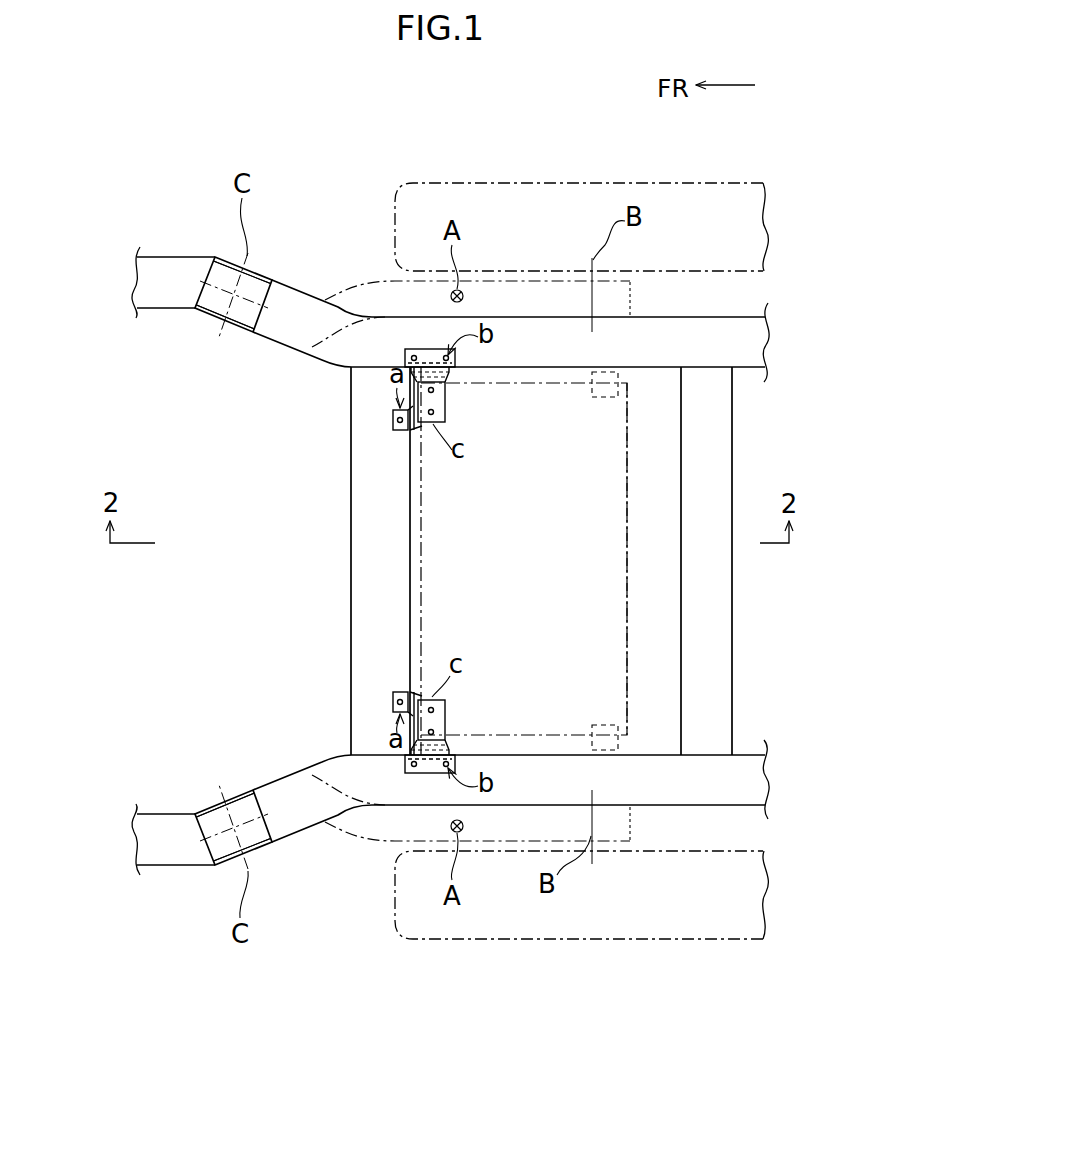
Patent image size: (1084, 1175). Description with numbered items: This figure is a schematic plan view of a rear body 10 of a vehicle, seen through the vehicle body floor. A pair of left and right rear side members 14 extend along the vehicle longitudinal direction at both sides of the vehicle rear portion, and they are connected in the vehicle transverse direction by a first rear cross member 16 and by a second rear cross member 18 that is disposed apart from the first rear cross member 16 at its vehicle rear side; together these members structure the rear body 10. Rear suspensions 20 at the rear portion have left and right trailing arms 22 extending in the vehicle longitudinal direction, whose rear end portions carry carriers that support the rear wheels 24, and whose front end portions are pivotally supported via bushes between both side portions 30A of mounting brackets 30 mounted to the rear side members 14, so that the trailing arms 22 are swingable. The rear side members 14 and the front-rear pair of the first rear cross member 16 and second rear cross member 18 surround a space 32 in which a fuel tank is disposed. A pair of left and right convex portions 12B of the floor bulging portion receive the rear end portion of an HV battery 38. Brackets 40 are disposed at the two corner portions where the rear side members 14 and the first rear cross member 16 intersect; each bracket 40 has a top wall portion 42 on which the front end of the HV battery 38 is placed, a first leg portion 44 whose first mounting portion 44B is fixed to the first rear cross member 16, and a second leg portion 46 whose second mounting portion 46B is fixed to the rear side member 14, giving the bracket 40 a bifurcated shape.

The rear body 10 is at (320, 170).
The rear side member 14 is at (750, 316).
The first rear cross member 16 is at (349, 595).
The second rear cross member 18 is at (735, 612).
The rear suspension 20 is at (357, 256).
The trailing arm 22 is at (632, 293).
The rear wheel 24 is at (496, 182).
The mounting bracket 30 is at (250, 334).
The side portion 30A is at (266, 277).
The space 32 is at (497, 551).
The HV battery 38 is at (627, 534).
The convex portion 12B is at (612, 399).
The bracket 40 is at (453, 562).
The top wall portion 42 is at (448, 397).
The first leg portion 44 is at (419, 432).
The first mounting portion 44B is at (398, 432).
The second leg portion 46 is at (460, 365).
The second mounting portion 46B is at (437, 350).